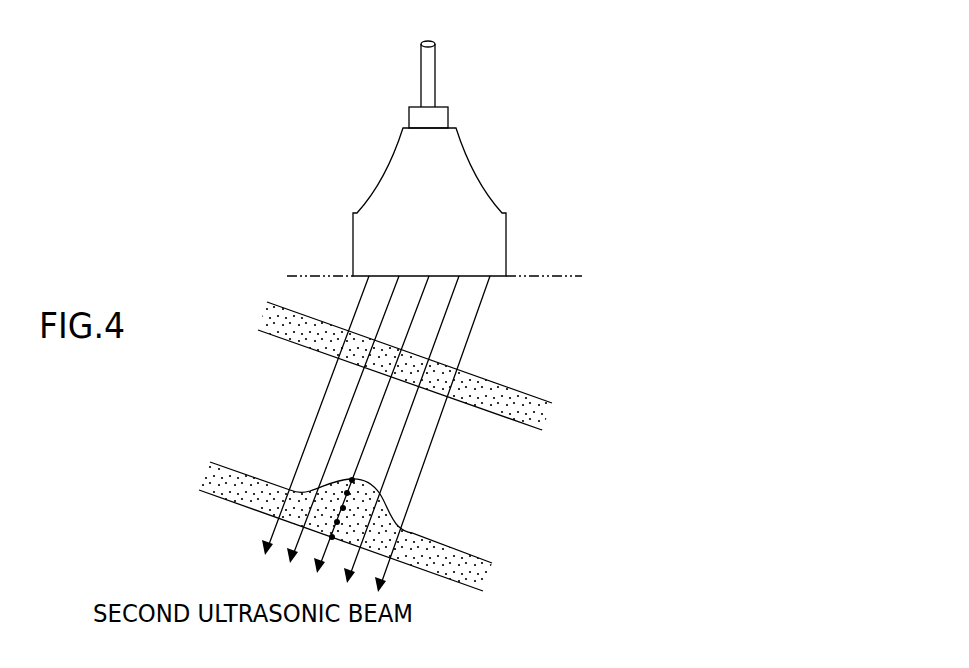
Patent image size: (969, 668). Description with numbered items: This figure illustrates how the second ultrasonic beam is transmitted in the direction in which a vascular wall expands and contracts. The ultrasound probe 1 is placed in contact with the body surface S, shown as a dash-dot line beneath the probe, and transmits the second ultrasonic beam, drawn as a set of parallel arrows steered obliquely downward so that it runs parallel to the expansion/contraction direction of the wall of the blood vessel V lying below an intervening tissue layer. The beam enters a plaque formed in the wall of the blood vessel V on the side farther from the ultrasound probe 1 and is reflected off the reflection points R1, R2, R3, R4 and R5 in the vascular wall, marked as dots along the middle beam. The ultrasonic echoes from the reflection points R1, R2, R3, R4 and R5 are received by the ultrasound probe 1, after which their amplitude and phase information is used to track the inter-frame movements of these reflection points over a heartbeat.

The ultrasound probe 1 is at (506, 241).
The body surface S is at (316, 275).
The blood vessel V is at (208, 497).
The reflection point R1 is at (352, 480).
The reflection point R2 is at (347, 493).
The reflection point R3 is at (343, 508).
The reflection point R4 is at (337, 522).
The reflection point R5 is at (332, 537).